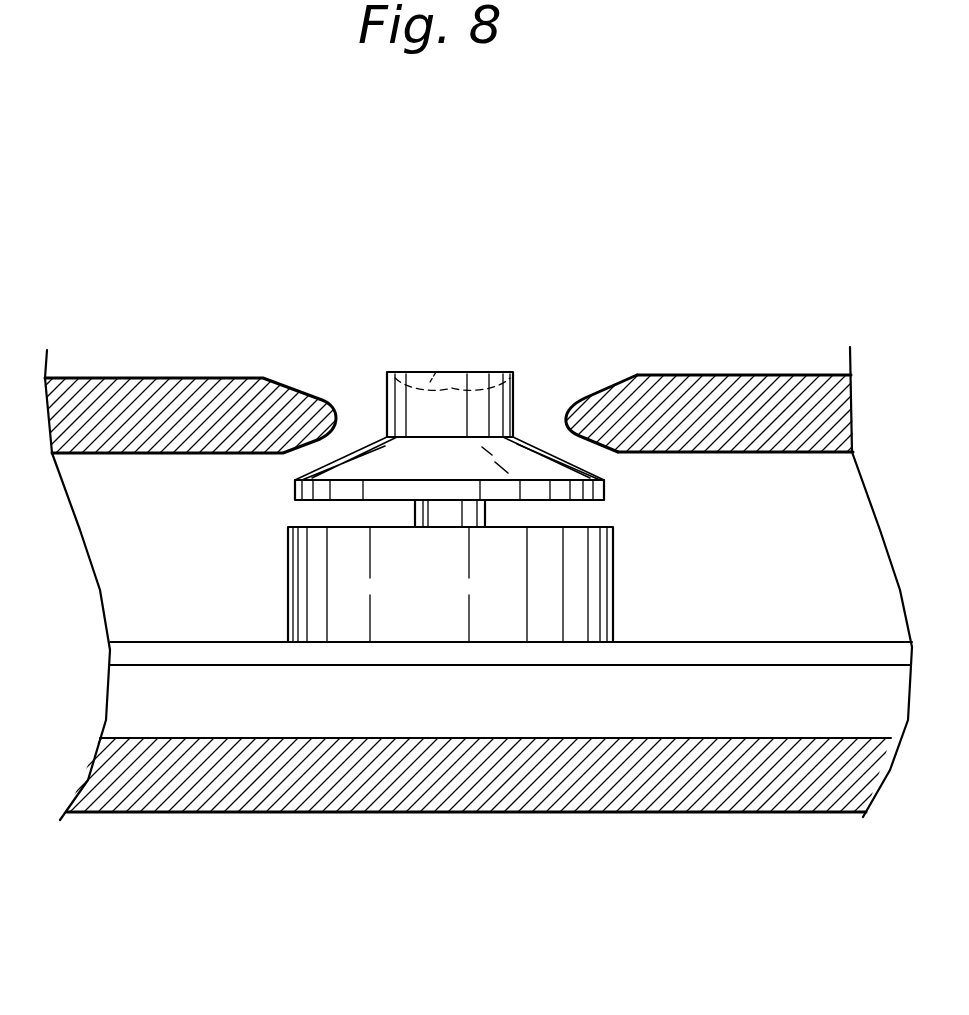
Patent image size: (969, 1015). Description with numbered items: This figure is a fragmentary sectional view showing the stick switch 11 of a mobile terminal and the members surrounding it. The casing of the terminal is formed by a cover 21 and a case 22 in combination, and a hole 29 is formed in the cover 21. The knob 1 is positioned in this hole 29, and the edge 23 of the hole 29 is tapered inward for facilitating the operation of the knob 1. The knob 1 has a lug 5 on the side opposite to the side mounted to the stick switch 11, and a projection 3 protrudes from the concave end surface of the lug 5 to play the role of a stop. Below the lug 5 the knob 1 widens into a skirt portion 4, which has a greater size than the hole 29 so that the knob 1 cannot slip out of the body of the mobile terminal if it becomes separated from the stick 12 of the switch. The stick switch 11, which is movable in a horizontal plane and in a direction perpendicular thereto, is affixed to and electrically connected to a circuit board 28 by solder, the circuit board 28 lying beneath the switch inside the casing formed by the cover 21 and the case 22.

The knob 1 is at (387, 376).
The projection 3 is at (478, 372).
The skirt portion 4 is at (307, 466).
The lug 5 is at (380, 398).
The stick switch 11 is at (353, 607).
The stick 12 is at (487, 505).
The cover 21 is at (751, 374).
The case 22 is at (682, 735).
The edge 23 is at (603, 385).
The circuit board 28 is at (182, 653).
The hole 29 is at (537, 420).